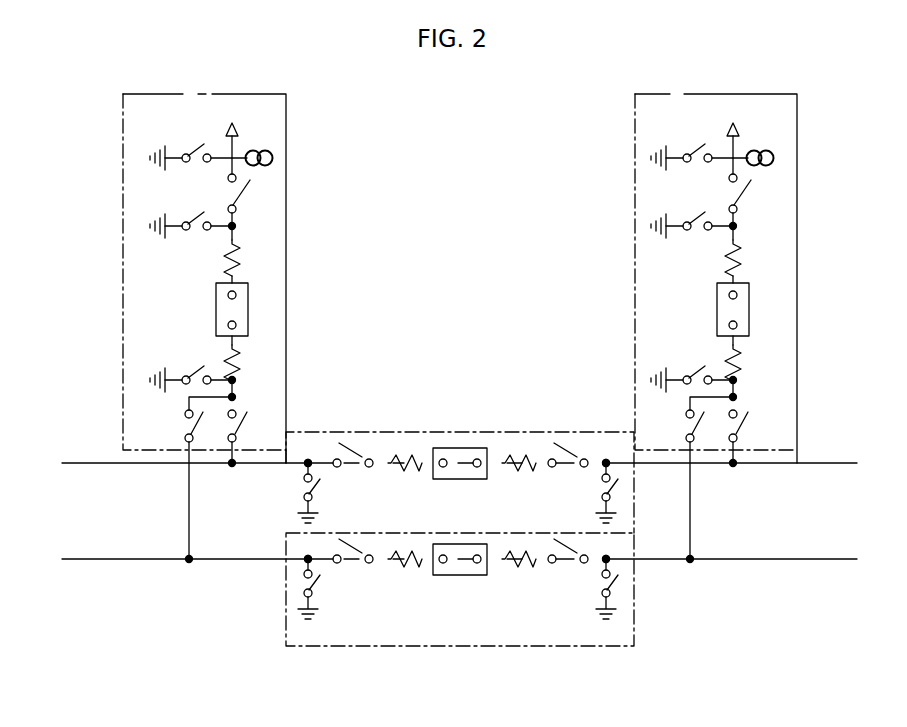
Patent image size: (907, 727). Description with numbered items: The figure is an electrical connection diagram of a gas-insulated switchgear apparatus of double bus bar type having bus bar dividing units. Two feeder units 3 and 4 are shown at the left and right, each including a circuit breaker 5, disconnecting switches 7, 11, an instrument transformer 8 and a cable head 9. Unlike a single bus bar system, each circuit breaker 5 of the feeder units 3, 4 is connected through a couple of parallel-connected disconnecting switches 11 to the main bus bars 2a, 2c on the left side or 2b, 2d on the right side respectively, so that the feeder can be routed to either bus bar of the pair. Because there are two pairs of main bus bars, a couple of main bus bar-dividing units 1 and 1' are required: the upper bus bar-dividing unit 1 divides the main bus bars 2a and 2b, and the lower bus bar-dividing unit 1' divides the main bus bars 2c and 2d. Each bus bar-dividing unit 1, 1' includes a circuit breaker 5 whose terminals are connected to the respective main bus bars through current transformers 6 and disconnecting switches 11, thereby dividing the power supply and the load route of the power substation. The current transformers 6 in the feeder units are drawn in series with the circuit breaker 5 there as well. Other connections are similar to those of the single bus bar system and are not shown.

The bus bar-dividing unit 1 is at (460, 452).
The main bus bar-dividing unit 1' is at (460, 619).
The main bus bar 2a is at (118, 465).
The main bus bar 2b is at (795, 465).
The main bus bar 2c is at (123, 561).
The main bus bar 2d is at (765, 561).
The feeder unit 3 is at (187, 108).
The feeder unit 4 is at (675, 108).
The circuit breaker 5 is at (252, 307).
The current transformer 6 is at (243, 257).
The disconnecting switch 7 is at (247, 195).
The instrument transformer 8 is at (273, 150).
The cable head 9 is at (248, 125).
The disconnecting switch 11 is at (248, 422).